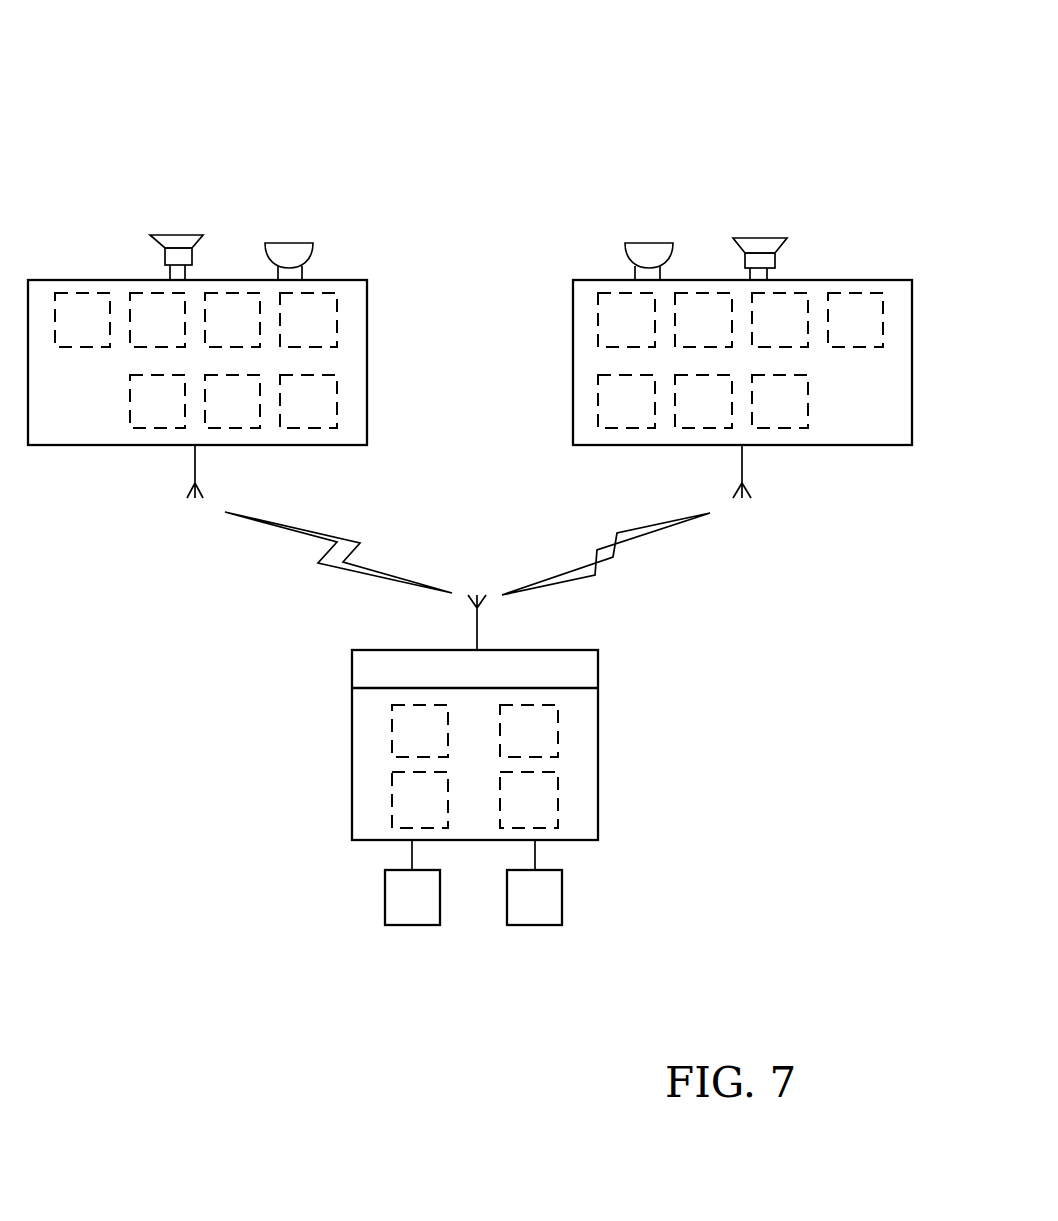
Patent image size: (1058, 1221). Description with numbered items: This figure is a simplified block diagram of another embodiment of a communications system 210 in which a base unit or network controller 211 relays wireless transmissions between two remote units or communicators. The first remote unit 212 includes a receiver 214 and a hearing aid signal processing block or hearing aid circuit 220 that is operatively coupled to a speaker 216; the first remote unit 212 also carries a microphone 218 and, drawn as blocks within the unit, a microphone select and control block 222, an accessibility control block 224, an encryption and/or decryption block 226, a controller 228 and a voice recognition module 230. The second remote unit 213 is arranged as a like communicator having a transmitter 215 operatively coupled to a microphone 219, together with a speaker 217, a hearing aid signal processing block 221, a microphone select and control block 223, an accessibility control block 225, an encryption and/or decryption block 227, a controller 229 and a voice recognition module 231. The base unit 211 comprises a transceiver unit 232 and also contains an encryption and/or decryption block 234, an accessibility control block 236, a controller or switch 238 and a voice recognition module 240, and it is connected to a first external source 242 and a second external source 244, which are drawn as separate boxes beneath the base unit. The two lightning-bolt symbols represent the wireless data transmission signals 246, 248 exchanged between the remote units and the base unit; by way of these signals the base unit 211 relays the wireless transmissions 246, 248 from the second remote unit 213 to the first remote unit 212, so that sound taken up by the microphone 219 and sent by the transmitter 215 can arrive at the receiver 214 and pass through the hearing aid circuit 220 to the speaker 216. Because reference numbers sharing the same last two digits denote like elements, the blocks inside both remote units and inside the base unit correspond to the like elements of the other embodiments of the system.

The system 210 is at (162, 56).
The base unit or network controller 211 is at (740, 772).
The first remote unit or communicator 212 is at (70, 490).
The second remote unit or communicator 213 is at (882, 464).
The receiver 214 is at (233, 430).
The transmitter 215 is at (707, 428).
The speaker 216 is at (185, 233).
The speaker 217 is at (782, 240).
The microphone 218 is at (313, 248).
The microphone 219 is at (628, 258).
The hearing aid signal processing block 220 is at (155, 290).
The hearing aid signal processing block 221 is at (810, 317).
The microphone select and control block 222 is at (345, 333).
The microphone select and control block 223 is at (590, 320).
The accessibility control block 224 is at (342, 383).
The accessibility control block 225 is at (590, 403).
The encryption and/or decryption block 226 is at (165, 432).
The encryption and/or decryption block 227 is at (790, 437).
The controller 228 is at (228, 290).
The controller 229 is at (703, 293).
The voice recognition module 230 is at (84, 290).
The voice recognition module 231 is at (872, 293).
The transceiver unit 232 is at (598, 668).
The encryption and/or decryption block 234 is at (558, 730).
The accessibility control block 236 is at (558, 801).
The controller or switch 238 is at (387, 730).
The voice recognition module 240 is at (392, 803).
The external source 242 is at (385, 895).
The external source 244 is at (562, 895).
The wireless data transmission signal 246 is at (360, 543).
The wireless data transmission signal 248 is at (615, 533).